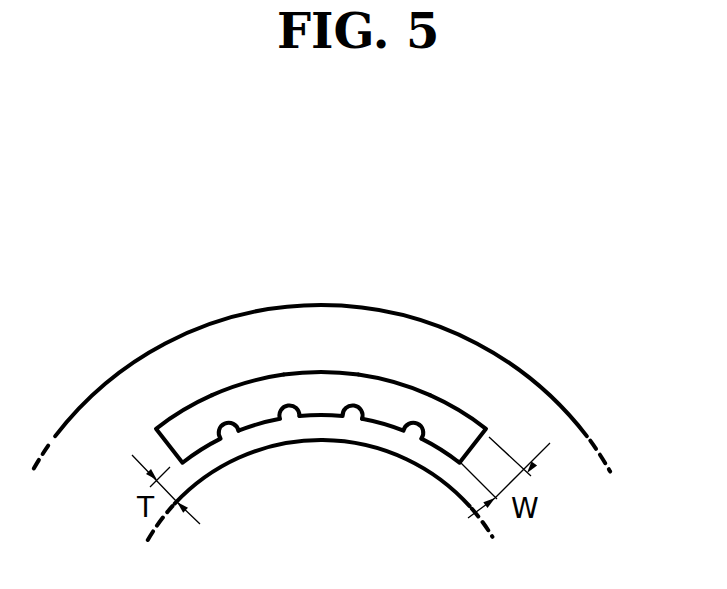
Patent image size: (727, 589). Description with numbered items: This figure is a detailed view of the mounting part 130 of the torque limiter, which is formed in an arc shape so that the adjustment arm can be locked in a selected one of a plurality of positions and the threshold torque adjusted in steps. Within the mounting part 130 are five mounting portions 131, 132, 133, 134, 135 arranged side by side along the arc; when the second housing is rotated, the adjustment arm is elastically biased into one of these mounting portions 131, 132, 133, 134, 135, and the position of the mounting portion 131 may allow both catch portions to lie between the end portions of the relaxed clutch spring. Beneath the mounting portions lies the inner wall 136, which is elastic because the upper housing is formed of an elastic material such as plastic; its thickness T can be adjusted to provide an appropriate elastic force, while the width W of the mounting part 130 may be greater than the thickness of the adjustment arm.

The mounting part 130 is at (311, 314).
The mounting portion 131 is at (195, 450).
The mounting portion 132 is at (255, 417).
The mounting portion 133 is at (320, 407).
The mounting portion 134 is at (382, 422).
The mounting portion 135 is at (454, 347).
The inner wall 136 is at (362, 430).